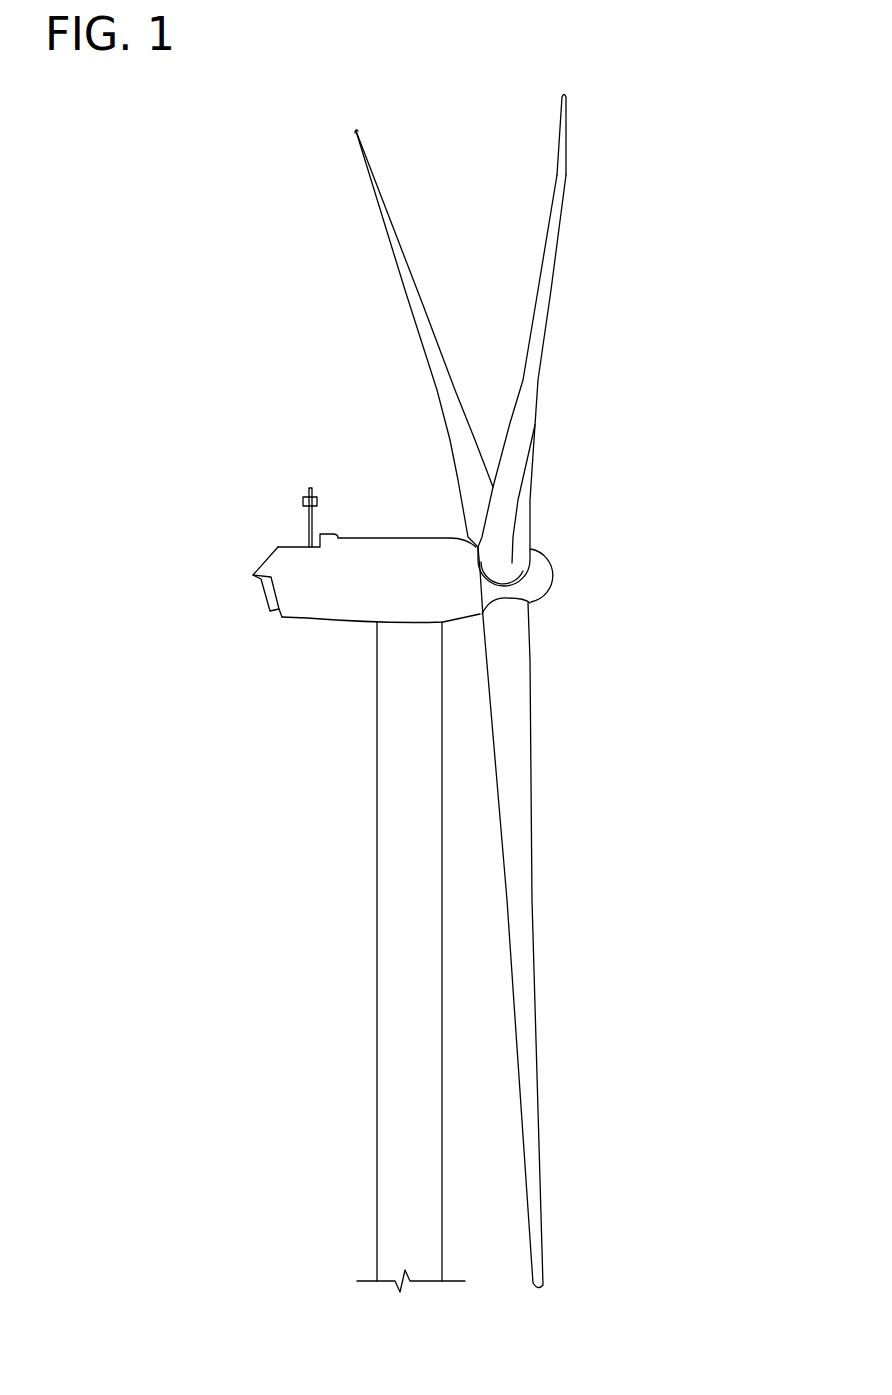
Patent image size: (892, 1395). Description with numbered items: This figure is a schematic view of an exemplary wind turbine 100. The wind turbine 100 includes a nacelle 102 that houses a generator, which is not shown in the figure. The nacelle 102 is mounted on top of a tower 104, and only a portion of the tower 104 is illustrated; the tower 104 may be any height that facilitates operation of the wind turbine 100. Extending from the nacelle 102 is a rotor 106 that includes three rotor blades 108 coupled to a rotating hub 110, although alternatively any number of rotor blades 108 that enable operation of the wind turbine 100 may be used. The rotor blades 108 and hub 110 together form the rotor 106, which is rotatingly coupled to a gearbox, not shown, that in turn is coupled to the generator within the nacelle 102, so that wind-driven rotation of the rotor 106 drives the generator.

The wind turbine 100 is at (243, 180).
The nacelle 102 is at (305, 622).
The tower 104 is at (377, 903).
The rotor 106 is at (603, 315).
The rotor blades 108 is at (393, 218).
The rotating hub 110 is at (549, 590).